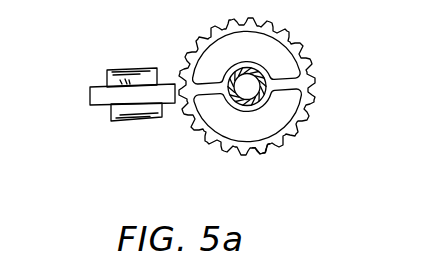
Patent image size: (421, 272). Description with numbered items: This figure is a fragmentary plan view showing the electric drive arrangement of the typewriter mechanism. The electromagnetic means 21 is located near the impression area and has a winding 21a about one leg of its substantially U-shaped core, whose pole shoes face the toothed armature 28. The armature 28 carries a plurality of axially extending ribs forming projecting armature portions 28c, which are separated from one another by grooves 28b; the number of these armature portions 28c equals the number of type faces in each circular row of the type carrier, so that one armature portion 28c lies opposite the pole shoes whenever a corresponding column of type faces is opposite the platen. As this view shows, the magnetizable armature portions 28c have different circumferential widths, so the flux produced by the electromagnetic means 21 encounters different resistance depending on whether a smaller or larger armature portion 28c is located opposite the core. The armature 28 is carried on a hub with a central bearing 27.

The electromagnetic means 21 is at (90, 102).
The winding 21a is at (120, 122).
The bearing 27 is at (232, 71).
The armature 28 is at (261, 65).
The grooves 28b is at (315, 82).
The armature portions 28c is at (273, 153).